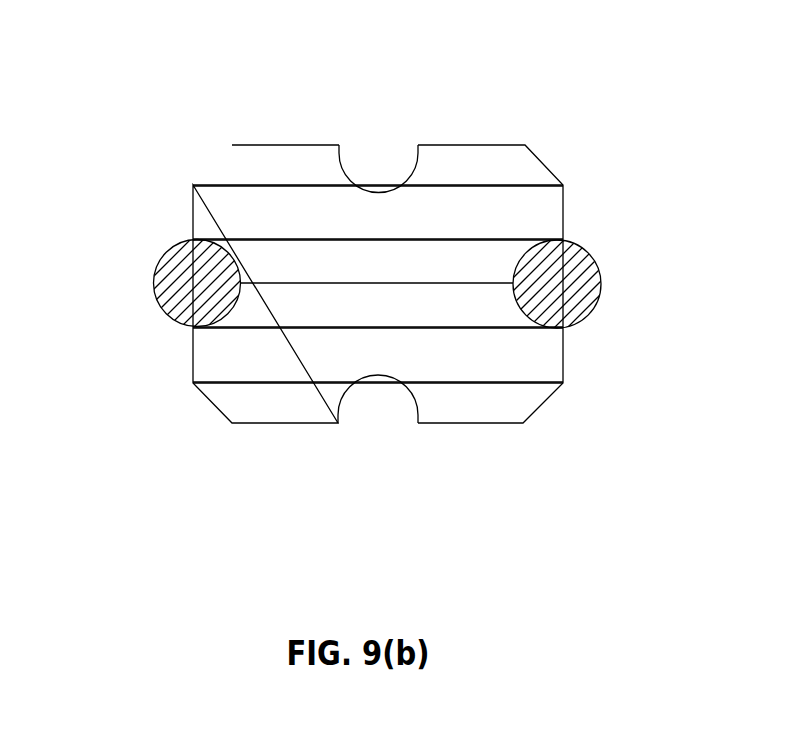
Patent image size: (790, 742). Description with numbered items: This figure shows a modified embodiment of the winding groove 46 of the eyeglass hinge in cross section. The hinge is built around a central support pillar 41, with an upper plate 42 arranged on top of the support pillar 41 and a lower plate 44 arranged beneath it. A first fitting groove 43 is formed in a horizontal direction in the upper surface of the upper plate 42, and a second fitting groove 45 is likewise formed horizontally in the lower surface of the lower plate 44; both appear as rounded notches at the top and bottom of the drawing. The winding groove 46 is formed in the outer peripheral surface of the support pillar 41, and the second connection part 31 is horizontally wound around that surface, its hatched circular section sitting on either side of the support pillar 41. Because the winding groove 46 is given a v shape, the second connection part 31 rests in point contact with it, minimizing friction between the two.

The second connection part 31 is at (176, 279).
The support pillar 41 is at (448, 263).
The upper plate 42 is at (204, 217).
The first fitting groove 43 is at (393, 163).
The lower plate 44 is at (210, 349).
The second fitting groove 45 is at (390, 406).
The winding groove 46 is at (508, 275).